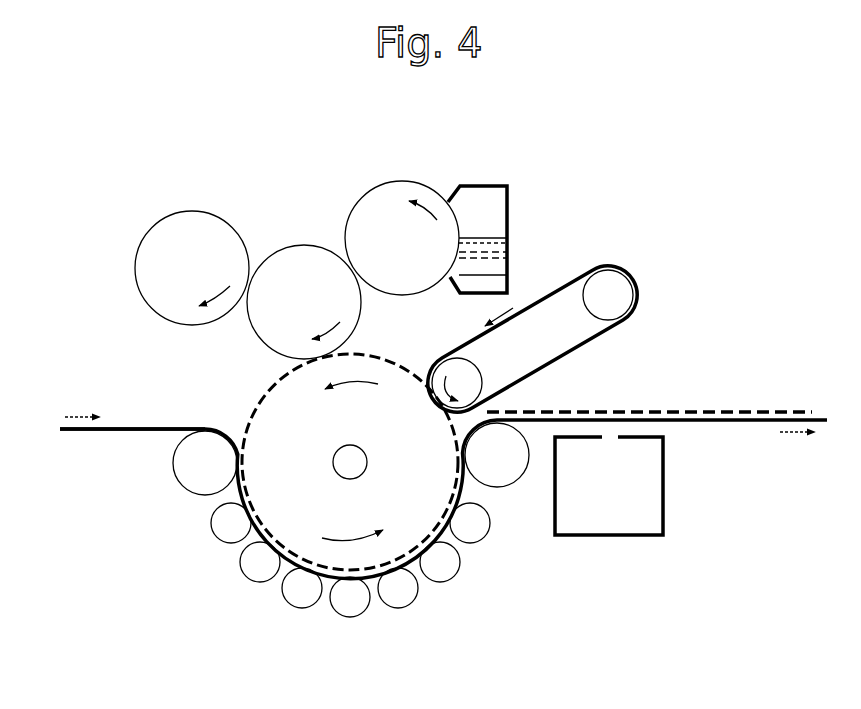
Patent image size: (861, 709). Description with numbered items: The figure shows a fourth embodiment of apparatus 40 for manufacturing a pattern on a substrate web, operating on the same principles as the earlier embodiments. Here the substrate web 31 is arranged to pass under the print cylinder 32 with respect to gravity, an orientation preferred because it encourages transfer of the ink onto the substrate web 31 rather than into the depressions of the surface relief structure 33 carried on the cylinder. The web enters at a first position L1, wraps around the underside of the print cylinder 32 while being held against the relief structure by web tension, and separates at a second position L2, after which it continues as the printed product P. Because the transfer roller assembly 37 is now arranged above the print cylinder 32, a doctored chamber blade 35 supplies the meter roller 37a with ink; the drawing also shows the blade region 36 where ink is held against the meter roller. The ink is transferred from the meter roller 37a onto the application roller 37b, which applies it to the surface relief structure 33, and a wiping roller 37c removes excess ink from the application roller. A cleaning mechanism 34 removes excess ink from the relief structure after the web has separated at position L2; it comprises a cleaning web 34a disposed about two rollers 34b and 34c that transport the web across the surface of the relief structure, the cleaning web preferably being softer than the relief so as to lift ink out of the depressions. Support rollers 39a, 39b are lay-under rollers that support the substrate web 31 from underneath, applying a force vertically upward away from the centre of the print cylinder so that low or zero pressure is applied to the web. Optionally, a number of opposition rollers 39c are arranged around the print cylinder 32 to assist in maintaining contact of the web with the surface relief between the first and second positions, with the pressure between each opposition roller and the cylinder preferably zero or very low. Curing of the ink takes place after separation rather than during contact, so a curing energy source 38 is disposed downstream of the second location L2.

The substrate web 31 is at (90, 433).
The print cylinder 32 is at (337, 515).
The surface relief structure 33 is at (267, 395).
The cleaning mechanism 34 is at (650, 316).
The cleaning web 34a is at (585, 342).
The roller 34b is at (462, 372).
The roller 34c is at (627, 290).
The doctored chamber blade 35 is at (487, 185).
The housing internal lines / coating unit 36 is at (497, 253).
The transfer roller assembly 37 is at (115, 175).
The meter roller 37a is at (372, 207).
The application roller 37b is at (293, 267).
The wiping roller 37c is at (193, 233).
The curing energy source 38 is at (633, 496).
The support roller 39a is at (188, 472).
The support roller 39b is at (512, 467).
The opposition rollers 39c is at (226, 528).
The apparatus 40 is at (549, 135).
The first position L1 is at (236, 427).
The second position L2 is at (470, 416).
The print medium / paper P is at (750, 406).